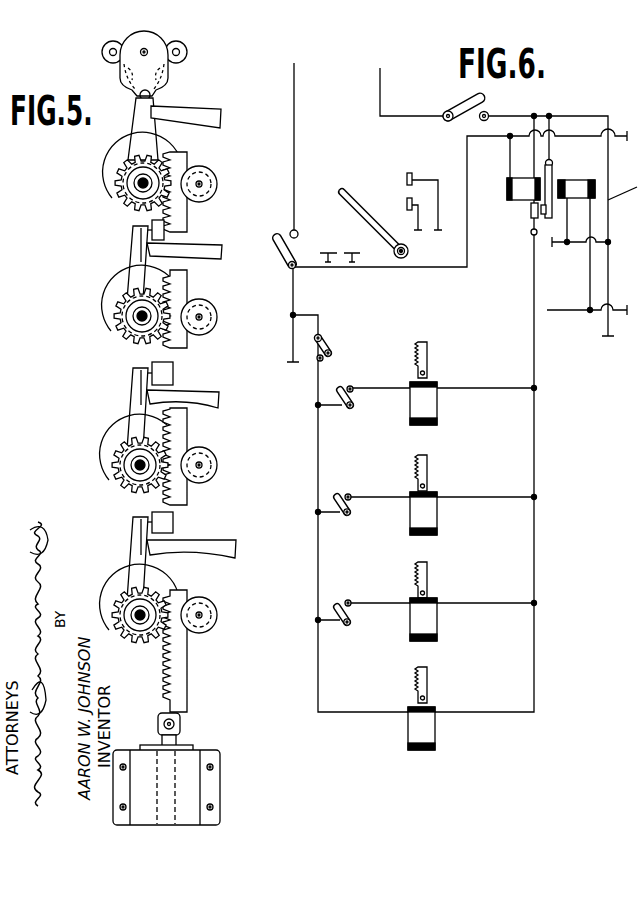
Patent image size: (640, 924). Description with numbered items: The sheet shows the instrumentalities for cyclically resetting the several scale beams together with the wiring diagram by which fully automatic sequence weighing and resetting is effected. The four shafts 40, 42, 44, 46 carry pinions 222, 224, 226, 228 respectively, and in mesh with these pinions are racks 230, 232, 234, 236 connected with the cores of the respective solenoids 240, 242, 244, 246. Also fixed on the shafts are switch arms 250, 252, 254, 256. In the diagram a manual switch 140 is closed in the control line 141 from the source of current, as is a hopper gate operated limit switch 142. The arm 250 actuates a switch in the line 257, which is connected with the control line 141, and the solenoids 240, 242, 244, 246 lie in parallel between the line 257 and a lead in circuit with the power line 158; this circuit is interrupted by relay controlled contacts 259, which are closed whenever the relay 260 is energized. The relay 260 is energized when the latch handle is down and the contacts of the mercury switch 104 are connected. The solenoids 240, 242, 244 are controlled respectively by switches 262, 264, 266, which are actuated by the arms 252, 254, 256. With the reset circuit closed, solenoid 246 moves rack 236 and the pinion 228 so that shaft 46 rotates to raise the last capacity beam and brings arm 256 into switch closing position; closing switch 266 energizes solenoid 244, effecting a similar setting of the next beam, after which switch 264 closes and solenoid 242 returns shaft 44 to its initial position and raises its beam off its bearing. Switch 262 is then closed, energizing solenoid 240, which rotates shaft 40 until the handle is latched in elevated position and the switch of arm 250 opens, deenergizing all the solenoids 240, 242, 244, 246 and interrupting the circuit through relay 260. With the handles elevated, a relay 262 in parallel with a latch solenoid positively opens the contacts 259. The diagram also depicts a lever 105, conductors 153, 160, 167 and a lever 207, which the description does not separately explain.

In FIG. 5, the shaft 40 is at (138, 187).
In FIG. 5, the shaft 42 is at (130, 320).
In FIG. 5, the shaft 44 is at (132, 470).
In FIG. 5, the shaft 46 is at (132, 611).
In FIG. 6, the mercury switch 104 is at (340, 246).
In FIG. 6, the operating lever 105 is at (383, 225).
In FIG. 6, the manual switch 140 is at (283, 262).
In FIG. 6, the control line 141 is at (301, 100).
In FIG. 6, the hopper gate operated limit switch 142 is at (486, 110).
In FIG. 6, the conductor 153 is at (465, 152).
In FIG. 6, the power line 158 is at (380, 68).
In FIG. 6, the conductor 160 is at (563, 312).
In FIG. 6, the conductor 167 is at (570, 243).
In FIG. 6, the switch lever 207 is at (462, 102).
In FIG. 5, the pinion 222 is at (135, 216).
In FIG. 5, the pinion 224 is at (128, 342).
In FIG. 5, the pinion 226 is at (133, 495).
In FIG. 5, the pinion 228 is at (147, 643).
In FIG. 5, the rack 230 is at (186, 222).
In FIG. 6, the rack 230 is at (428, 356).
In FIG. 5, the rack 232 is at (187, 344).
In FIG. 6, the rack 232 is at (427, 463).
In FIG. 5, the rack 234 is at (182, 433).
In FIG. 6, the rack 234 is at (427, 572).
In FIG. 5, the rack 236 is at (186, 675).
In FIG. 6, the rack 236 is at (427, 678).
In FIG. 6, the solenoid 240 is at (437, 408).
In FIG. 6, the solenoid 242 is at (437, 515).
In FIG. 6, the solenoid 244 is at (437, 623).
In FIG. 5, the solenoid 246 is at (182, 793).
In FIG. 6, the solenoid 246 is at (435, 733).
In FIG. 5, the switch arm 250 is at (152, 160).
In FIG. 6, the switch arm 250 is at (328, 340).
In FIG. 5, the switch arm 252 is at (133, 260).
In FIG. 6, the switch arm 252 is at (353, 408).
In FIG. 5, the switch arm 254 is at (130, 403).
In FIG. 6, the switch arm 254 is at (352, 510).
In FIG. 5, the switch arm 256 is at (137, 573).
In FIG. 6, the switch arm 256 is at (352, 622).
In FIG. 6, the line 257 is at (293, 297).
In FIG. 6, the relay controlled contacts 259 is at (531, 210).
In FIG. 6, the relay 260 is at (520, 190).
In FIG. 6, the switch 262 is at (577, 188).
In FIG. 6, the switch 264 is at (350, 495).
In FIG. 6, the switch 266 is at (350, 602).